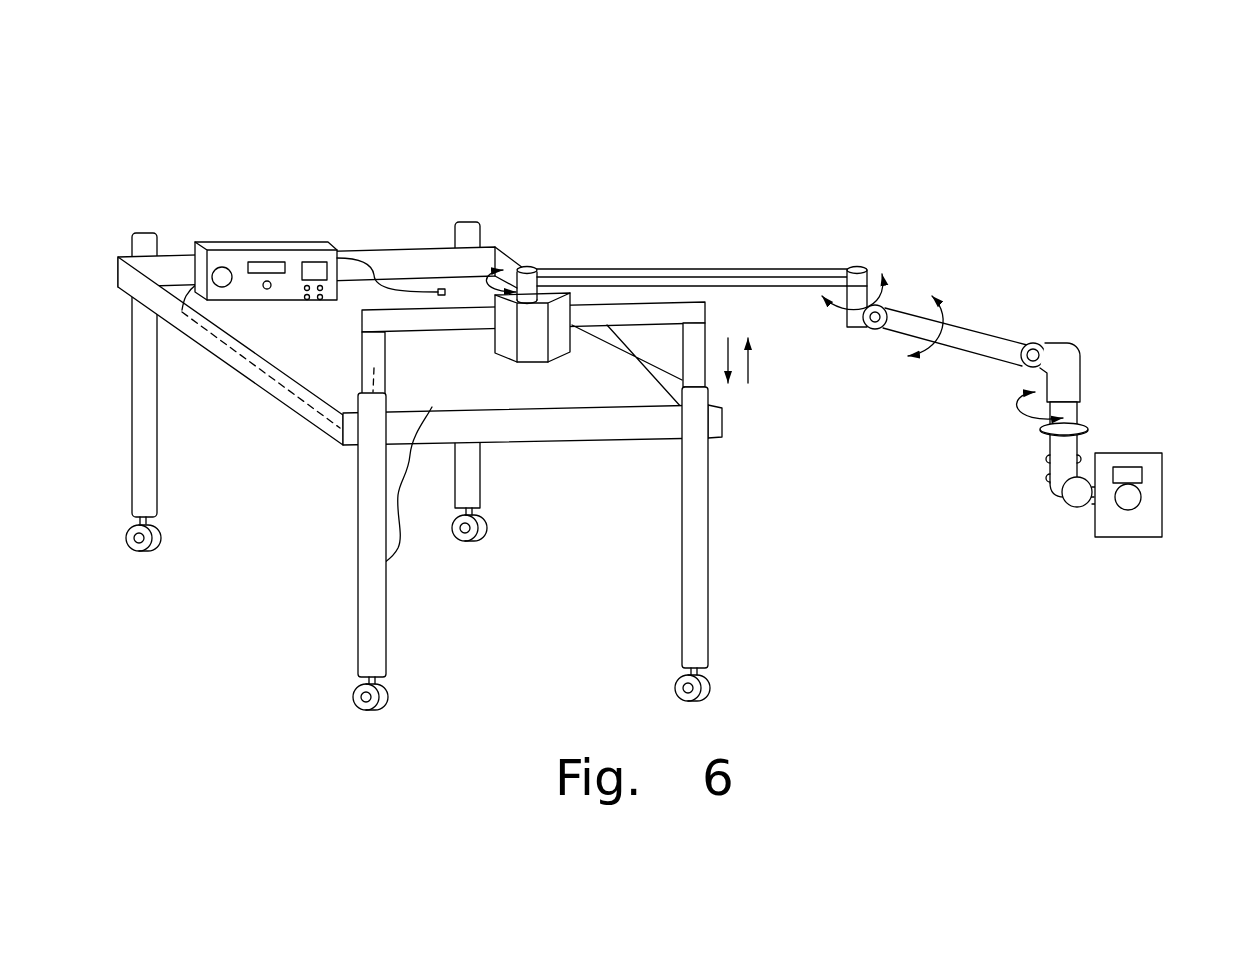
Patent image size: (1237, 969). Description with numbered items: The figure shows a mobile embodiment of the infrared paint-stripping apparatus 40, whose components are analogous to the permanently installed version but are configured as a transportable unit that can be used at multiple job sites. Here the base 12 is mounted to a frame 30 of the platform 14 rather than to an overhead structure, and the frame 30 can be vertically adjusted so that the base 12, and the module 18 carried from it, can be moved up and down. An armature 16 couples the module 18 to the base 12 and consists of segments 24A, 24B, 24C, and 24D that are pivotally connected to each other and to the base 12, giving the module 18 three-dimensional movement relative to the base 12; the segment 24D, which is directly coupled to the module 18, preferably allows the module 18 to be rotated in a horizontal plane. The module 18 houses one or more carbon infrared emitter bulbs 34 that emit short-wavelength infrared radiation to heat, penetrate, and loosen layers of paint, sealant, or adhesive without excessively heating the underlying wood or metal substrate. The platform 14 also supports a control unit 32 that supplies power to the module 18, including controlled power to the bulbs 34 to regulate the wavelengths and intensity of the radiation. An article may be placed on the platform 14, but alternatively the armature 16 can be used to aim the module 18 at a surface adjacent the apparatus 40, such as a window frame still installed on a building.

The apparatus 40 is at (669, 367).
The control unit 32 is at (266, 248).
The segment 24A is at (722, 268).
The armature 16 is at (791, 353).
The frame 30 is at (707, 310).
The segment 24B is at (853, 330).
The segment 24C is at (973, 347).
The segment 24D is at (1057, 463).
The infrared emitter bulb 34 is at (1134, 491).
The module 18 is at (1154, 541).
The platform 14 is at (297, 418).
The base 12 is at (554, 364).